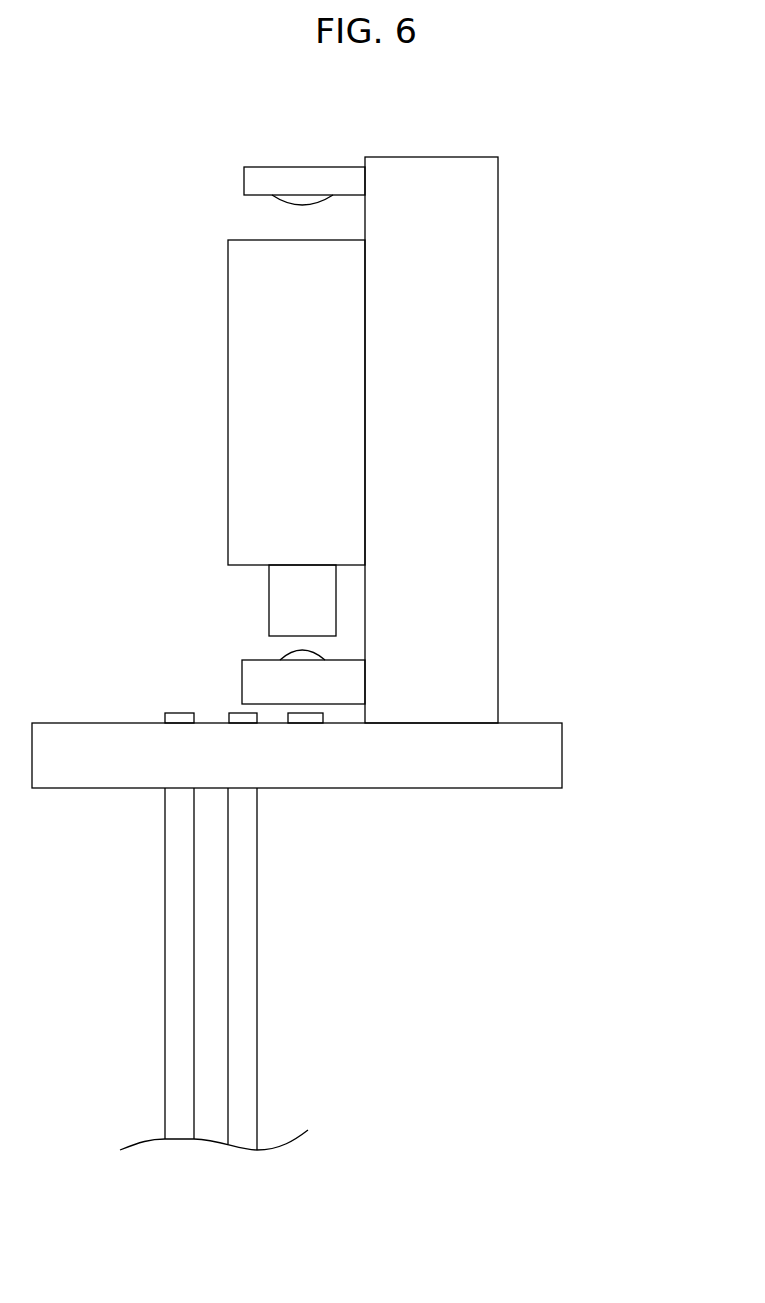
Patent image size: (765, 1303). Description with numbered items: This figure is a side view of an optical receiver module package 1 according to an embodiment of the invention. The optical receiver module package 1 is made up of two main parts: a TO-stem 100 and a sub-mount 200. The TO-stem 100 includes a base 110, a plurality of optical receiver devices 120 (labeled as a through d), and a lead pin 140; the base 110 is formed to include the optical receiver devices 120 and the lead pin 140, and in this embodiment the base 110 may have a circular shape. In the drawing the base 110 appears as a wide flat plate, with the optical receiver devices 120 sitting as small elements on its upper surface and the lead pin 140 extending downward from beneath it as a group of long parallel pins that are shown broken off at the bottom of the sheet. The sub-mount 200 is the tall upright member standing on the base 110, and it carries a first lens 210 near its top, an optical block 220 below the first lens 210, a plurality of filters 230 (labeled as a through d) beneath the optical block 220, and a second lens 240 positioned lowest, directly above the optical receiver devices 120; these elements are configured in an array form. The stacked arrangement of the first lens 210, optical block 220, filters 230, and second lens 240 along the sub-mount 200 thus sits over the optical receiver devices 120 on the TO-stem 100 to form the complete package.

The optical receiver module package 1 is at (523, 178).
The TO-stem 100 is at (520, 800).
The base 110 is at (563, 755).
The optical receiver devices 120 is at (312, 722).
The lead pin 140 is at (242, 975).
The sub-mount 200 is at (455, 579).
The first lens 210 is at (244, 181).
The optical block 220 is at (228, 400).
The filters 230 is at (269, 598).
The second lens 240 is at (242, 680).